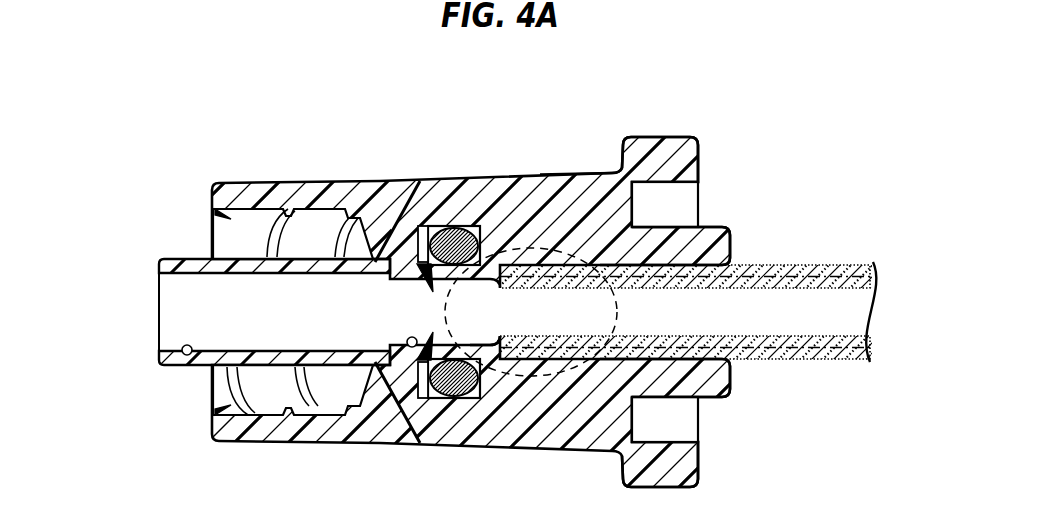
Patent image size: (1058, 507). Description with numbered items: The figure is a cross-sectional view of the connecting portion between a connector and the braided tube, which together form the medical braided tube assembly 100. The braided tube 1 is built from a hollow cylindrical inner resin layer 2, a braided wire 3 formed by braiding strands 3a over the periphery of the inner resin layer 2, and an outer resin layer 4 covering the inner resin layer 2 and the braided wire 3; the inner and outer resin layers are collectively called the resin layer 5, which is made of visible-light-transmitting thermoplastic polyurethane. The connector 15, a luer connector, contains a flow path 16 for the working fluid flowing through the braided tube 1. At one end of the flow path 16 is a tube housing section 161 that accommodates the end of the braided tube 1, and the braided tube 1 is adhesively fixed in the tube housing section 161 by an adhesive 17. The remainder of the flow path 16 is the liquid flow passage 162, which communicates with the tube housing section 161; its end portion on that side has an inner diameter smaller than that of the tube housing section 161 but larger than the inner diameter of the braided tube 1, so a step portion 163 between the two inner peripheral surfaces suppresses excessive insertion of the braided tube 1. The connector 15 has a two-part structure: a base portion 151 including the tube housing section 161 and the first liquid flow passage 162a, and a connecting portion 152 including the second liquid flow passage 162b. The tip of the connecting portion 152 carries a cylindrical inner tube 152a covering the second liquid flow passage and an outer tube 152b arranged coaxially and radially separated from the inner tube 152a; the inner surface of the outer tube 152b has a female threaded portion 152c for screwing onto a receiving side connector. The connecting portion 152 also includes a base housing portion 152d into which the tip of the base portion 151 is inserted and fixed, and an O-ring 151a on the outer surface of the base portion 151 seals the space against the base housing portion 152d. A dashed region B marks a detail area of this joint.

The medical braided tube assembly 100 is at (529, 280).
The connecting portion 152 is at (529, 310).
The inner tube 152a is at (310, 310).
The outer tube 152b is at (297, 188).
The female threaded portion 152c is at (254, 408).
The base housing portion 152d is at (594, 232).
The liquid flow passage 162 is at (282, 316).
The first liquid flow passage 162a is at (408, 348).
The second liquid flow passage 162b is at (186, 355).
The base portion 151 is at (515, 294).
The O-ring 151a is at (455, 230).
The region B is at (522, 248).
The connector 15 is at (695, 133).
The flow path 16 is at (171, 291).
The adhesive 17 is at (472, 366).
The tube housing section 161 is at (733, 266).
The step portion 163 is at (500, 347).
The braided tube 1 is at (693, 301).
The inner resin layer 2 is at (803, 283).
The braided wire 3 is at (865, 280).
The strand 3a is at (877, 277).
The outer resin layer 4 is at (827, 270).
The resin layer 5 is at (693, 276).